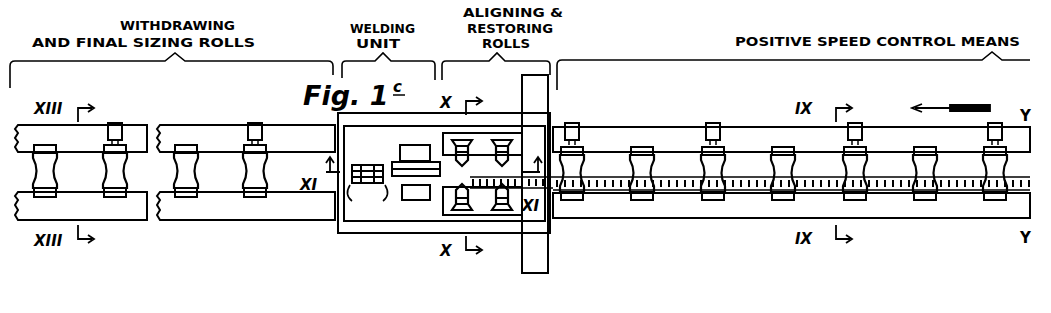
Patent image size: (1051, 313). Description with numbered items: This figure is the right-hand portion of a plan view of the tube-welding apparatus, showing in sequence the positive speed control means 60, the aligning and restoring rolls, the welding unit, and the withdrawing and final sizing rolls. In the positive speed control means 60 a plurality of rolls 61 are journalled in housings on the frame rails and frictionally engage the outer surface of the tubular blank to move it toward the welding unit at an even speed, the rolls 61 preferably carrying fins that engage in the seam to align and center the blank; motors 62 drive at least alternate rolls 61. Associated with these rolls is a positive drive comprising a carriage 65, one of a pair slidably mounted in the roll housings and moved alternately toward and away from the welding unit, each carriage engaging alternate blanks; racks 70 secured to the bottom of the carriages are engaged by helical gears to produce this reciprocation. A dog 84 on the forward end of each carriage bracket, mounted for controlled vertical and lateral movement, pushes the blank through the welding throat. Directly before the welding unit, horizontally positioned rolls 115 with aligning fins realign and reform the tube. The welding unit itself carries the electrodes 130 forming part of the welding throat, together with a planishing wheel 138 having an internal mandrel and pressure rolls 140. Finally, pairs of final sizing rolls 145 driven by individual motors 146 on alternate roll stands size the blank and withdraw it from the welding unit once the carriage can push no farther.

The positive speed control means 60 is at (791, 126).
The rolls 61 is at (633, 166).
The motors 62 is at (573, 126).
The carriage 65 is at (886, 181).
The racks 70 is at (957, 182).
The dog 84 is at (440, 180).
The horizontally positioned rolls 115 is at (500, 165).
The electrodes 130 is at (393, 169).
The planishing wheel 138 is at (365, 165).
The pressure rolls 140 is at (366, 200).
The final sizing rolls 145 is at (250, 171).
The motors 146 is at (255, 128).